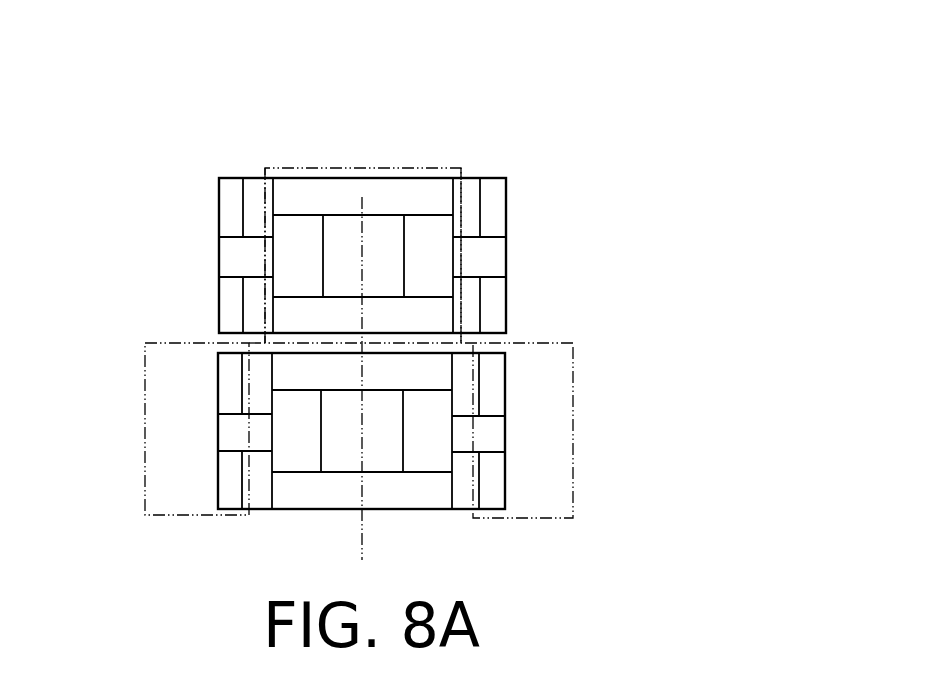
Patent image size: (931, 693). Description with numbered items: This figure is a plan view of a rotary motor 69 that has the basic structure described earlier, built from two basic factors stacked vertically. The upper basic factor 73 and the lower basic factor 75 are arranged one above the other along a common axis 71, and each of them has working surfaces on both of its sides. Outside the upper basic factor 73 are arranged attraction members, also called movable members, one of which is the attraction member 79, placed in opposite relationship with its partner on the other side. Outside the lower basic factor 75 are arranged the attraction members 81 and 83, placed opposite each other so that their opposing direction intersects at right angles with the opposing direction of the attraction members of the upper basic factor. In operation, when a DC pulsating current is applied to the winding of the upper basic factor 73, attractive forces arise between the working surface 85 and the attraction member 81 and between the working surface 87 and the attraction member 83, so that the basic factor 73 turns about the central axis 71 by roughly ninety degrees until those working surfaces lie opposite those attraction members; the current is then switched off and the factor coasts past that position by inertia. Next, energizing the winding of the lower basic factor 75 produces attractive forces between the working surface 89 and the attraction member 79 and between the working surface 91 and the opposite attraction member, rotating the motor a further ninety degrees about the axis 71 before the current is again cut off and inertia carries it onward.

The rotary motor 69 is at (496, 103).
The common axis 71 is at (365, 537).
The upper basic factor 73 is at (413, 166).
The lower basic factor 75 is at (417, 355).
The attraction member 79 is at (462, 168).
The attraction member 81 is at (146, 421).
The attraction member 83 is at (576, 430).
The working surface 85 is at (219, 260).
The working surface 87 is at (506, 210).
The working surface 89 is at (218, 432).
The working surface 91 is at (505, 398).